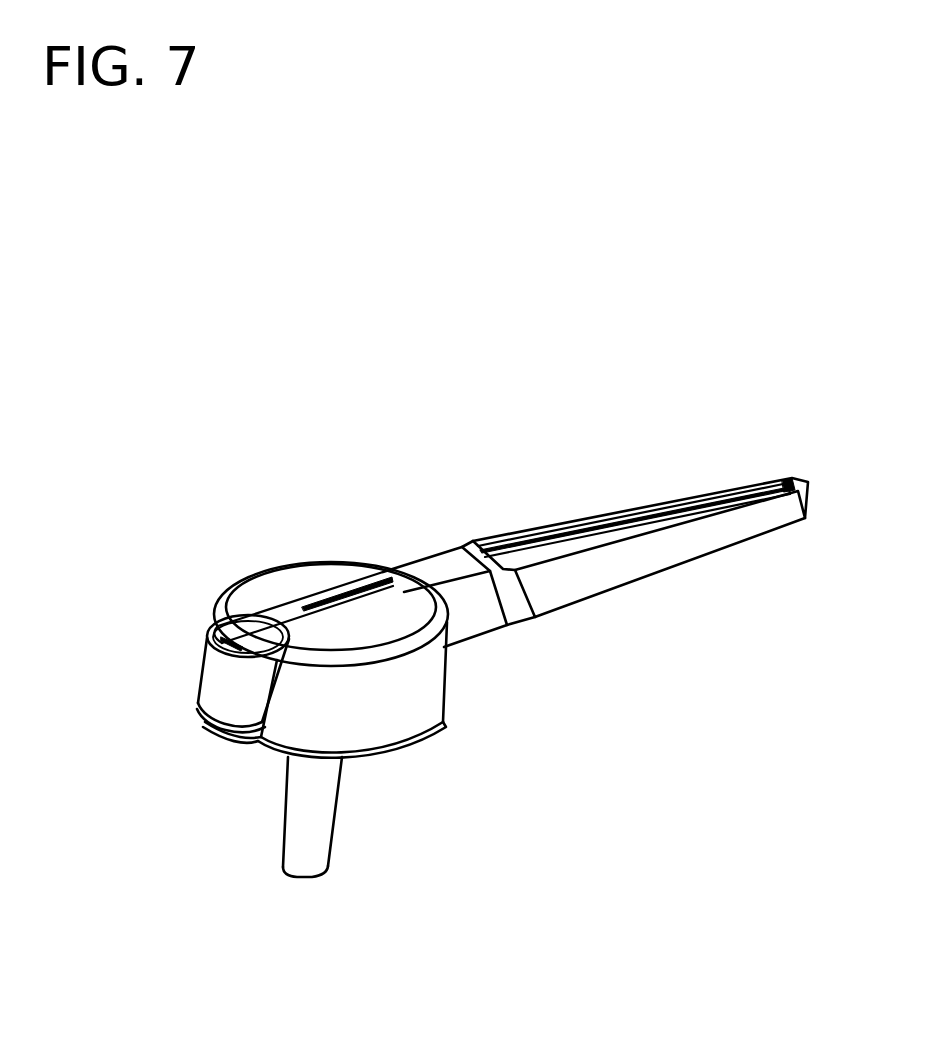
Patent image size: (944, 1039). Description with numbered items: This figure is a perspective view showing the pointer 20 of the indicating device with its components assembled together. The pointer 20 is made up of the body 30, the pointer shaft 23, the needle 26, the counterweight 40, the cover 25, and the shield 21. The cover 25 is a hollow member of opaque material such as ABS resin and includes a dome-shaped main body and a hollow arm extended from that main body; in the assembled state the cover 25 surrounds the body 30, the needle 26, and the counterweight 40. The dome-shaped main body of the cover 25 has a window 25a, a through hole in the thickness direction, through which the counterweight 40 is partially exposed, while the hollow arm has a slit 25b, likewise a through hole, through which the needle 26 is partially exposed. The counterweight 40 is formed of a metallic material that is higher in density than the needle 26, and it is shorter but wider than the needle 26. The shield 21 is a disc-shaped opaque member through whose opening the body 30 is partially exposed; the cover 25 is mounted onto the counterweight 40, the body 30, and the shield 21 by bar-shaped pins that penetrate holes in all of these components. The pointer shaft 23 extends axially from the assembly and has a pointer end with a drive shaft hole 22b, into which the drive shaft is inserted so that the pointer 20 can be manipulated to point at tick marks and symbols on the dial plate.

The pointer 20 is at (861, 407).
The shield 21 is at (243, 733).
The drive shaft hole 22b is at (333, 855).
The pointer shaft 23 is at (340, 797).
The cover 25 is at (420, 556).
The window 25a is at (307, 607).
The slit 25b is at (623, 517).
The needle 26 is at (690, 495).
The body 30 is at (337, 578).
The counterweight 40 is at (256, 632).